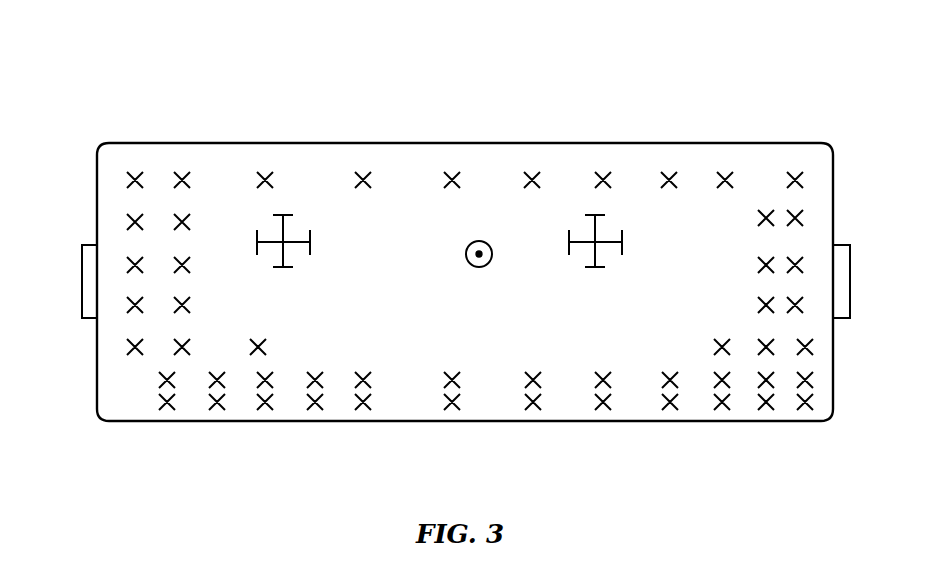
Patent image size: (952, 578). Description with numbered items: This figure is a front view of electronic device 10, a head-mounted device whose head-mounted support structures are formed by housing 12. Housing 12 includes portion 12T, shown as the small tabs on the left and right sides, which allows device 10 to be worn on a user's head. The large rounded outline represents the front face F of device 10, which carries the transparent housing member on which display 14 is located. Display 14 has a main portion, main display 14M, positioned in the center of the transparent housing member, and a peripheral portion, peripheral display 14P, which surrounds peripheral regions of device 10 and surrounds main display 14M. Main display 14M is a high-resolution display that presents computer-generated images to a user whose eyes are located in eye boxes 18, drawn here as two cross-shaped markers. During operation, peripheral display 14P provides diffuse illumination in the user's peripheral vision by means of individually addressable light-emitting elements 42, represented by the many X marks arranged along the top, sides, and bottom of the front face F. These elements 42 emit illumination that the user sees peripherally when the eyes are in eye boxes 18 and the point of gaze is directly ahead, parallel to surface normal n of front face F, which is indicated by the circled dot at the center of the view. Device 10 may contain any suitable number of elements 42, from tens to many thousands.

The electronic device 10 is at (813, 68).
The housing 12 is at (433, 286).
The housing portion 12T is at (82, 282).
The display 14 is at (557, 143).
The main display 14M is at (381, 226).
The peripheral display 14P is at (108, 400).
The eye boxes 18 is at (283, 255).
The light-emitting elements 42 is at (314, 409).
The surface normal n is at (484, 261).
The front face F is at (487, 340).